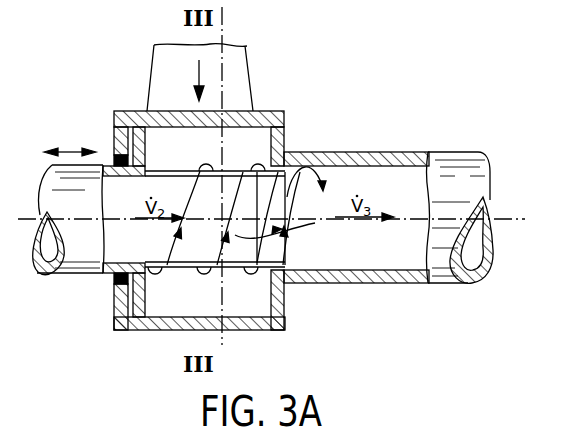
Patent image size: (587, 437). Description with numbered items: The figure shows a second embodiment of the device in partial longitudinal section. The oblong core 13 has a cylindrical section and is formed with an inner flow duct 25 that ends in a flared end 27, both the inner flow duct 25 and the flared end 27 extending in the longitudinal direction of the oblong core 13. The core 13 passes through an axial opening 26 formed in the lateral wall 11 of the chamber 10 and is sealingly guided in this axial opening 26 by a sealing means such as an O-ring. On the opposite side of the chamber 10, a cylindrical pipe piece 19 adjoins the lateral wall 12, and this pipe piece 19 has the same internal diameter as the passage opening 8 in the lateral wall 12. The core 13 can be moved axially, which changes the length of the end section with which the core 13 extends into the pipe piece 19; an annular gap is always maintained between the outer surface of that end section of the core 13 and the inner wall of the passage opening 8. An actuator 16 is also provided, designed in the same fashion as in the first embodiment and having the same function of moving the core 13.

The passage opening 8 is at (290, 270).
The chamber 10 is at (237, 138).
The lateral wall 11 is at (117, 313).
The lateral wall 12 is at (280, 143).
The oblong core 13 is at (240, 268).
The actuator 16 is at (144, 298).
The cylindrical pipe piece 19 is at (364, 295).
The inner flow duct 25 is at (40, 237).
The axial opening 26 is at (115, 277).
The flared end 27 is at (252, 170).